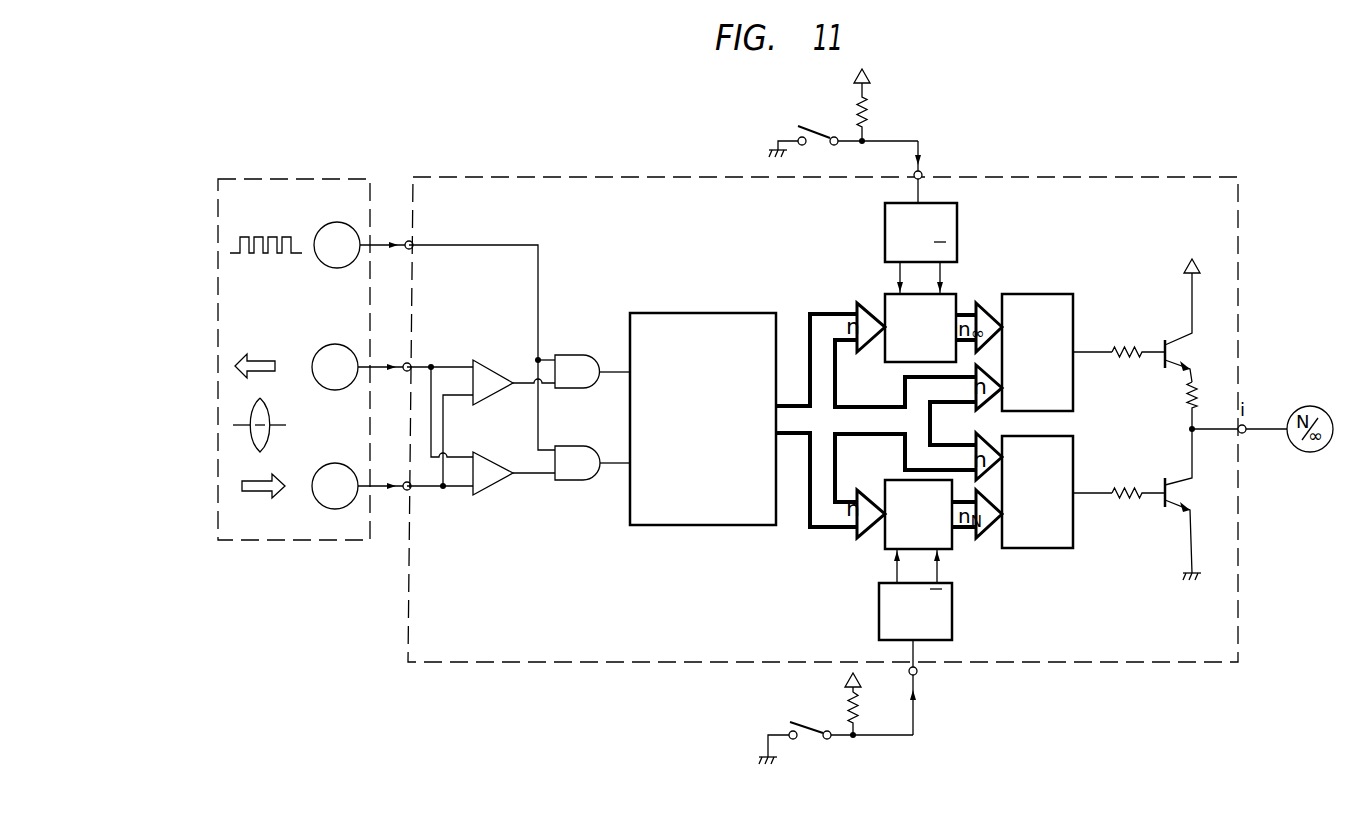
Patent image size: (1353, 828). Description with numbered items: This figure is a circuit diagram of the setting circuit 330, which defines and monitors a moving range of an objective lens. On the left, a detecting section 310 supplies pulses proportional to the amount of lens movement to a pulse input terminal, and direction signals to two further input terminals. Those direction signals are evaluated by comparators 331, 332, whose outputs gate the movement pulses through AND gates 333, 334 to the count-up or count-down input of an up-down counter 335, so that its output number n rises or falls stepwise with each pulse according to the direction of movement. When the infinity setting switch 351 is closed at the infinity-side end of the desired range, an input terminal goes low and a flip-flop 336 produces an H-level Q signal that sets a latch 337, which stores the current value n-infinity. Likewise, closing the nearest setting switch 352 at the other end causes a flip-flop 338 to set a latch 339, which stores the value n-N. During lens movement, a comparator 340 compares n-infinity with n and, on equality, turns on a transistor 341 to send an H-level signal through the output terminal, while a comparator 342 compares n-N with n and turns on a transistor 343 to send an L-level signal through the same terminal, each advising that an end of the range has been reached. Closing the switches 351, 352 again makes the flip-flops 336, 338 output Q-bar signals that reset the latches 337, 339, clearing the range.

The signal input section 310 is at (333, 178).
The setting circuit 330 is at (582, 664).
The comparator 331 is at (494, 365).
The comparator 332 is at (494, 458).
The AND gate 333 is at (576, 354).
The AND gate 334 is at (576, 445).
The up-down counter 335 is at (701, 312).
The flip-flop 336 is at (960, 223).
The latch 337 is at (972, 278).
The flip-flop 338 is at (953, 604).
The latch 339 is at (952, 558).
The comparator 340 is at (1031, 293).
The transistor 341 is at (1164, 344).
The comparator 342 is at (1073, 470).
The transistor 343 is at (1163, 484).
The infinity setting switch 351 is at (824, 124).
The nearest setting switch 352 is at (808, 723).